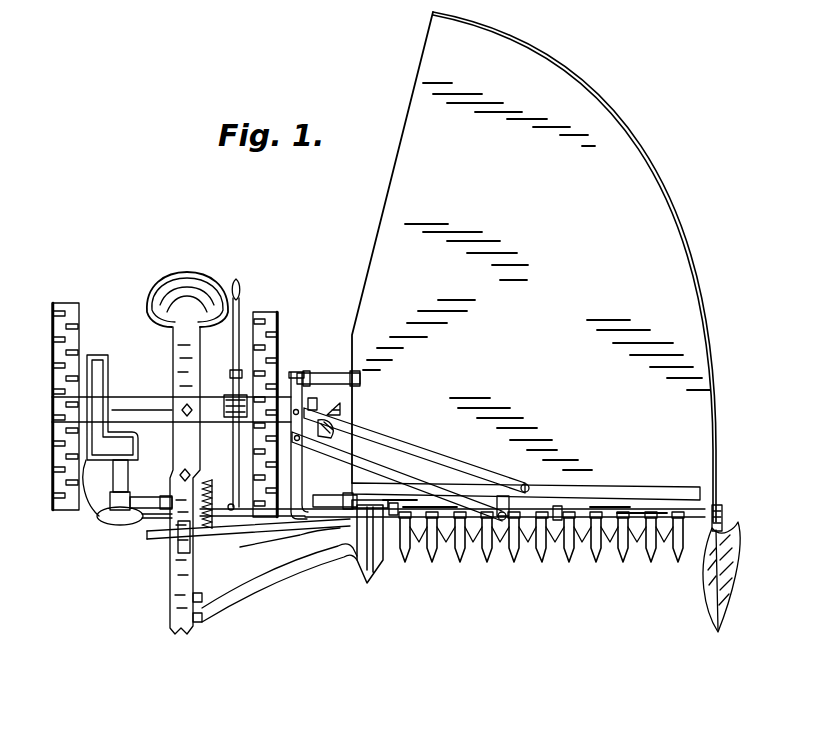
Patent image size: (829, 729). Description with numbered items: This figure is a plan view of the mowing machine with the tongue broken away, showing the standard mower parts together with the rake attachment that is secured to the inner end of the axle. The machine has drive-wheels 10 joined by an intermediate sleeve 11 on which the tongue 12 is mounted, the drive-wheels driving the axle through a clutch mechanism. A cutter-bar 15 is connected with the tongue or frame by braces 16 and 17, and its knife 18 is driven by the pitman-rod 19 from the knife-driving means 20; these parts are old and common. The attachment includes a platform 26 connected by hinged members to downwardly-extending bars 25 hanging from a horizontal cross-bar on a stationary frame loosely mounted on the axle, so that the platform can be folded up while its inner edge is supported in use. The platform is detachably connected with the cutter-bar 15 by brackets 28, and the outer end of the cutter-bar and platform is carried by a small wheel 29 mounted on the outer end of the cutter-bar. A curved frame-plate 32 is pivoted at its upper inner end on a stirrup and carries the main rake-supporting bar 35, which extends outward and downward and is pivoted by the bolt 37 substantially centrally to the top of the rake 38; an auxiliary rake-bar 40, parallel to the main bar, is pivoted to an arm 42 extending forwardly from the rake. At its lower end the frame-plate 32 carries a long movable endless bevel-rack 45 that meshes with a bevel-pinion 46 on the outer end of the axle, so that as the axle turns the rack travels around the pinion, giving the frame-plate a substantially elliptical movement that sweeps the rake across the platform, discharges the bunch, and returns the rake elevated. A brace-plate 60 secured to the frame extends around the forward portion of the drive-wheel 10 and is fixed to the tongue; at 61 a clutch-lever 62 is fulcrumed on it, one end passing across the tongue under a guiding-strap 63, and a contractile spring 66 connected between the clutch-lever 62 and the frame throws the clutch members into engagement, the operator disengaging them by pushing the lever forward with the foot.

The drive-wheel 10 is at (280, 332).
The intermediate sleeve 11 is at (132, 400).
The tongue 12 is at (172, 577).
The cutter-bar 15 is at (722, 510).
The brace 16 is at (270, 580).
The brace 17 is at (226, 507).
The knife 18 is at (407, 560).
The pitman-rod 19 is at (152, 517).
The knife-driving means 20 is at (100, 518).
The downwardly-extending bar 25 is at (318, 503).
The platform 26 is at (534, 267).
The bracket 28 is at (562, 511).
The small wheel 29 is at (730, 522).
The frame-plate 32 is at (334, 436).
The main rake-supporting bar 35 is at (420, 453).
The bolt 37 is at (525, 484).
The rake 38 is at (620, 492).
The auxiliary rake-bar 40 is at (348, 462).
The arm 42 is at (511, 505).
The endless bevel-rack 45 is at (355, 436).
The bevel-pinion 46 is at (342, 410).
The brace-plate 60 is at (220, 540).
The fulcrum 61 is at (305, 538).
The clutch-lever 62 is at (170, 540).
The guiding-strap 63 is at (192, 552).
The spring 66 is at (209, 488).